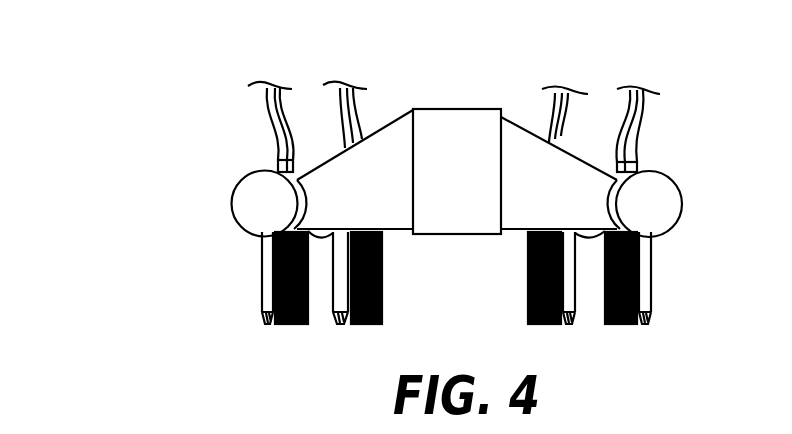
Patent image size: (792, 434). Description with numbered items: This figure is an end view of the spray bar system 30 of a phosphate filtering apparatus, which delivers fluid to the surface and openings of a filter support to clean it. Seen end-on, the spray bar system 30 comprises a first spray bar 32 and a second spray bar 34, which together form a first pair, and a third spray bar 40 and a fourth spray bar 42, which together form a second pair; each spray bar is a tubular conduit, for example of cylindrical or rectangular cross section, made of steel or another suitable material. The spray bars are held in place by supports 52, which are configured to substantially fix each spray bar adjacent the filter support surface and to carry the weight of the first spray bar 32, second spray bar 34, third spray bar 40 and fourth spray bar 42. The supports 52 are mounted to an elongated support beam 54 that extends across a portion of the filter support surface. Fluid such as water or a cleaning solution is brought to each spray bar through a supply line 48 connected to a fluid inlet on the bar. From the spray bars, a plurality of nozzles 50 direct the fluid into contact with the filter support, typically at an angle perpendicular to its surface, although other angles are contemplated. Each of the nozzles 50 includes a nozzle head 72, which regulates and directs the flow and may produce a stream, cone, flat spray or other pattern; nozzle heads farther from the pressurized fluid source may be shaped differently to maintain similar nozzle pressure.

The spray bar system 30 is at (606, 56).
The first spray bar 32 is at (582, 233).
The second spray bar 34 is at (330, 233).
The third spray bar 40 is at (660, 198).
The fourth spray bar 42 is at (248, 199).
The supply line 48 is at (647, 100).
The nozzles 50 is at (245, 285).
The supports 52 is at (396, 121).
The elongated support beam 54 is at (470, 109).
The nozzle head 72 is at (266, 315).